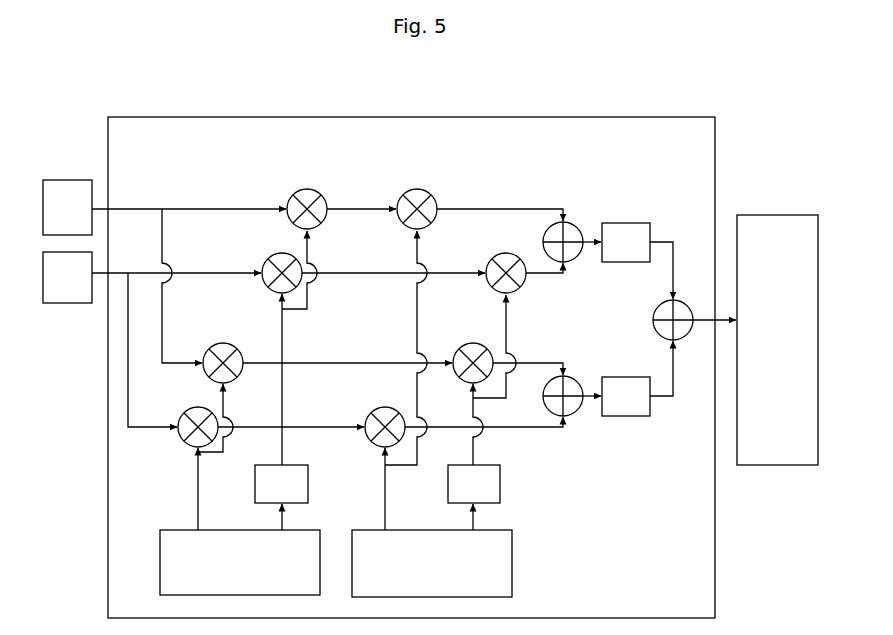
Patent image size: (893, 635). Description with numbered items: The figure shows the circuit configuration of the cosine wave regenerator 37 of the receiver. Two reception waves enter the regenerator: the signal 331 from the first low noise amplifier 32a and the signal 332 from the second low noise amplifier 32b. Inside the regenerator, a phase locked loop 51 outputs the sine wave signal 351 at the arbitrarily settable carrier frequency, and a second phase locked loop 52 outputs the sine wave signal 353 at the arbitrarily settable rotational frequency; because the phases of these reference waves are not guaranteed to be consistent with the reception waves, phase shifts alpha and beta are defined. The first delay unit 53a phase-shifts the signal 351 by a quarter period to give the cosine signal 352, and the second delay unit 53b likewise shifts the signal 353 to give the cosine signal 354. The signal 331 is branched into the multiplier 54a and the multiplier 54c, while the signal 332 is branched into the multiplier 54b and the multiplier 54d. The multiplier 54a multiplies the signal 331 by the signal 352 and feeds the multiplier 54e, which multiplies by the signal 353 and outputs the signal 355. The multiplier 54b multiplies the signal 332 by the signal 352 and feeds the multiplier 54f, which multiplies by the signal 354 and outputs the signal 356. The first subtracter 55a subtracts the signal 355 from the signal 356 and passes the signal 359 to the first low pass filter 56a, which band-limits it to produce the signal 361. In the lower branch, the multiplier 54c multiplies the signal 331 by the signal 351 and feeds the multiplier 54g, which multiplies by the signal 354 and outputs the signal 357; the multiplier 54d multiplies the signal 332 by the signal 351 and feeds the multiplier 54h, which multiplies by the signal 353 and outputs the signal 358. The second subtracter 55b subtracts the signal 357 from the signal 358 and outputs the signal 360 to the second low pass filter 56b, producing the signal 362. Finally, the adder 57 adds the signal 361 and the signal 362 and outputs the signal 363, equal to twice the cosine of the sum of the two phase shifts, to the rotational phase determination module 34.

The cosine wave regenerator 37 is at (603, 116).
The first low noise amplifier 32a is at (63, 179).
The second low noise amplifier 32b is at (63, 304).
The signal 331 is at (127, 208).
The signal 332 is at (125, 272).
The multiplier 54a is at (296, 192).
The multiplier 54b is at (270, 257).
The multiplier 54c is at (211, 347).
The multiplier 54d is at (186, 411).
The multiplier 54e is at (406, 192).
The multiplier 54f is at (494, 257).
The multiplier 54g is at (461, 347).
The multiplier 54h is at (373, 411).
The first subtracter 55a is at (575, 228).
The second subtracter 55b is at (575, 382).
The first low pass filter 56a is at (625, 222).
The second low pass filter 56b is at (625, 376).
The adder 57 is at (683, 303).
The first delay unit 53a is at (308, 480).
The second delay unit 53b is at (500, 482).
The phase locked loop 51 is at (160, 550).
The phase locked loop 52 is at (512, 553).
The signal 351 is at (197, 495).
The signal 352 is at (283, 336).
The signal 353 is at (388, 497).
The signal 354 is at (478, 400).
The signal 355 is at (485, 208).
The signal 356 is at (540, 276).
The signal 357 is at (543, 362).
The signal 358 is at (528, 430).
The signal 359 is at (583, 256).
The signal 360 is at (583, 410).
The signal 361 is at (673, 260).
The signal 362 is at (673, 380).
The signal 363 is at (700, 328).
The rotational phase determination module 34 is at (790, 214).